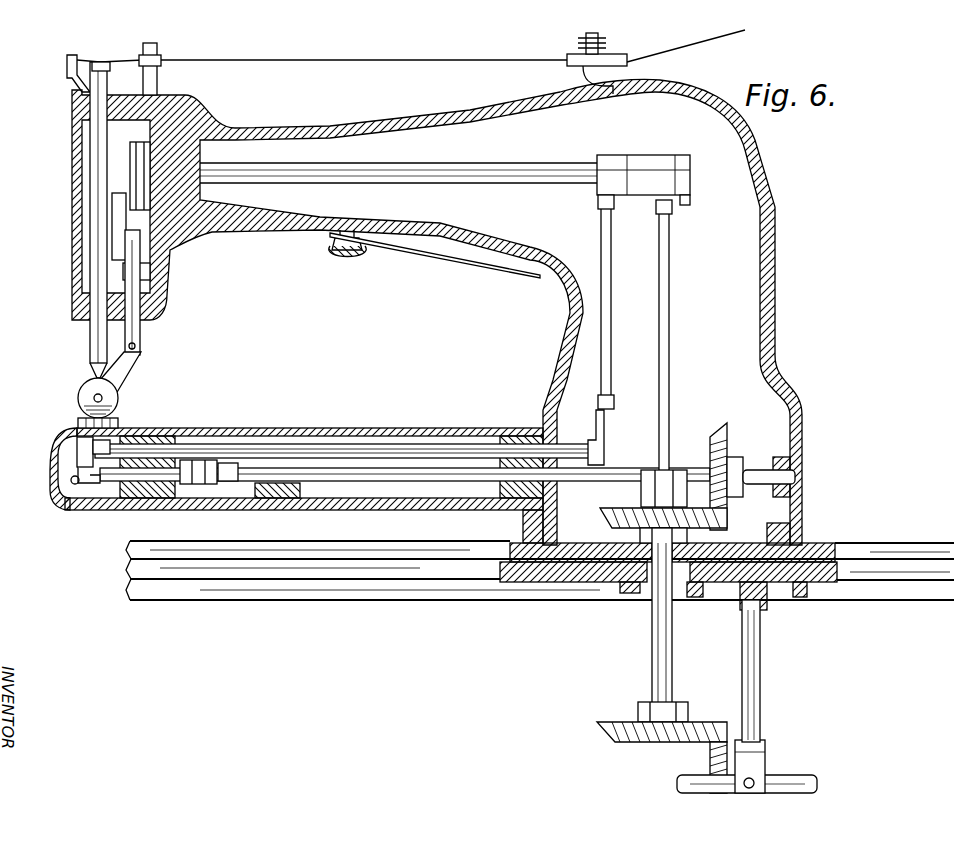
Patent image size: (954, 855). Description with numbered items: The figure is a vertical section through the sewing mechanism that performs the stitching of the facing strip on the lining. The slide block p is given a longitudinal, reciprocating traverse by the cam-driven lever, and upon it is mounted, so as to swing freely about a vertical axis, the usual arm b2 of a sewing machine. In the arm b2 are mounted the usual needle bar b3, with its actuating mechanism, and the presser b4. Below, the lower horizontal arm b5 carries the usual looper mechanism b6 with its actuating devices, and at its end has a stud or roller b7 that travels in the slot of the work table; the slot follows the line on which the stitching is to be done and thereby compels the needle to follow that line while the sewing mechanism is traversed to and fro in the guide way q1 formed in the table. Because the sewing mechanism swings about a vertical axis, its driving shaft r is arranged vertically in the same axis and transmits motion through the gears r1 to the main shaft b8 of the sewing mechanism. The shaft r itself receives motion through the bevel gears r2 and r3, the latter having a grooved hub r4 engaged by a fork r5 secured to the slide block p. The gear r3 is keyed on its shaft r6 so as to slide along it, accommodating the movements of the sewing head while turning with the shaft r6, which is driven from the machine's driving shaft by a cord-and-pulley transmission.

The arm b2 is at (777, 345).
The needle bar b3 is at (100, 276).
The presser b4 is at (135, 370).
The lower horizontal arm b5 is at (355, 457).
The looper mechanism b6 is at (75, 457).
The stud or roller b7 is at (78, 420).
The main shaft of the sewing mechanism b8 is at (757, 468).
The slide block p is at (803, 548).
The guide way q1 is at (885, 558).
The driving shaft r is at (658, 628).
The gears r1 is at (722, 522).
The bevel gear r2 is at (700, 720).
The bevel gear r3 is at (715, 760).
The grooved hub r4 is at (765, 758).
The fork r5 is at (758, 697).
The shaft r6 is at (797, 778).